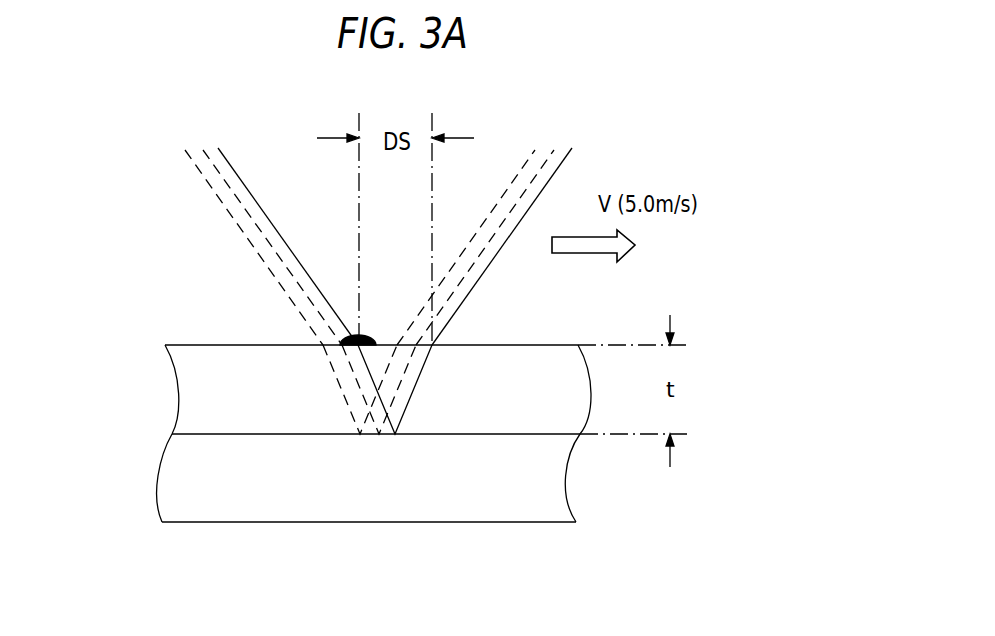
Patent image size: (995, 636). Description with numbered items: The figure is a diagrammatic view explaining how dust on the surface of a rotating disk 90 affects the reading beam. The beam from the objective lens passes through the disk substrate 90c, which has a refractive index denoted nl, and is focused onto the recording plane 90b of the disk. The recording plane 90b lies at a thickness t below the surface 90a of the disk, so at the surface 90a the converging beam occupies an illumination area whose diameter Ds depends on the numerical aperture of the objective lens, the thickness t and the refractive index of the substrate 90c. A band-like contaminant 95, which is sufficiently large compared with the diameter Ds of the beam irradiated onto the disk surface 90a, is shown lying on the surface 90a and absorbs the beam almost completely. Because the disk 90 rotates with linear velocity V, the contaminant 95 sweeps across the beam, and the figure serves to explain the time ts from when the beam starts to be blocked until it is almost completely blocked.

The disk 90 is at (441, 544).
The surface of the disk 90a is at (195, 345).
The recording plane of the disk 90b is at (215, 433).
The disk substrate 90c is at (193, 379).
The contaminant 95 is at (362, 335).